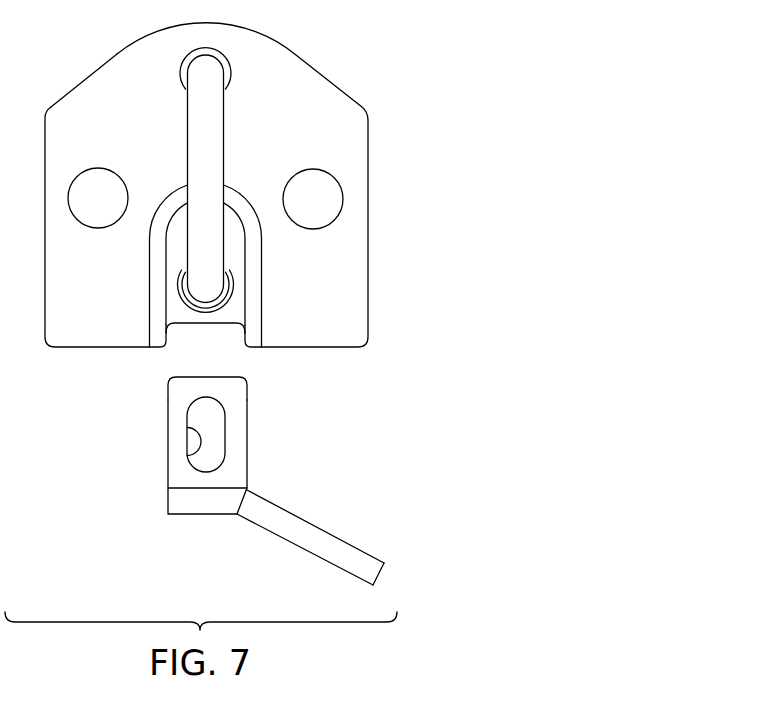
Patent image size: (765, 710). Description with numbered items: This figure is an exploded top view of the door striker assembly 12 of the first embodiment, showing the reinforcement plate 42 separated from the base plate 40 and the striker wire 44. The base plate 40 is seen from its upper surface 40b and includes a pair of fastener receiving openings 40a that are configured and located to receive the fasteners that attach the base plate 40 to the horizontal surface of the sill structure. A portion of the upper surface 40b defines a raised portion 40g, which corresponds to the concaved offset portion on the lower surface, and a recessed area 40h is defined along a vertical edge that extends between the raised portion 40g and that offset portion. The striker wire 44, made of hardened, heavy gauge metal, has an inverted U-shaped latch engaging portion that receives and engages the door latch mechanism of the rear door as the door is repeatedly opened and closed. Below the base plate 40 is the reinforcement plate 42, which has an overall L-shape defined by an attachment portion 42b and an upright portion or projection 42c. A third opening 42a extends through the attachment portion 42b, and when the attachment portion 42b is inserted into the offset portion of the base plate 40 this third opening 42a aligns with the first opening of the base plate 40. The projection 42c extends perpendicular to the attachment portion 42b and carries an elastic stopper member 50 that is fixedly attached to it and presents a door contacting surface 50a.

The door striker assembly 12 is at (402, 77).
The base plate 40 is at (280, 73).
The fastener receiving openings 40a is at (128, 195).
The upper surface 40b is at (112, 98).
The raised portion 40g is at (237, 259).
The recessed area 40h is at (215, 325).
The striker wire 44 is at (208, 126).
The reinforcement plate 42 is at (229, 474).
The third opening 42a is at (203, 447).
The attachment portion 42b is at (182, 395).
The projection 42c is at (192, 500).
The elastic stopper member 50 is at (322, 528).
The door contacting surface 50a is at (351, 543).